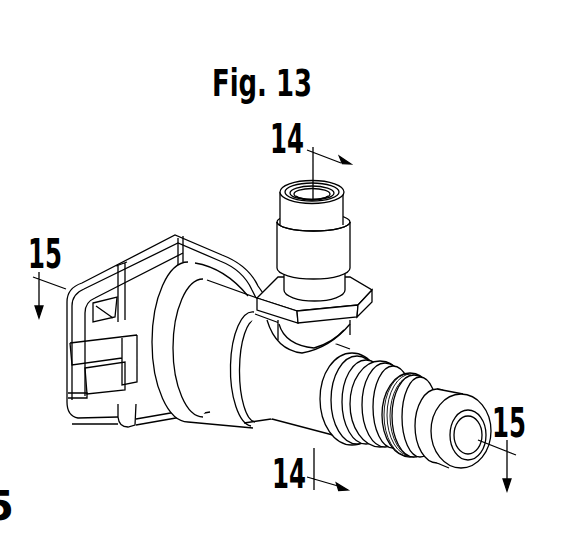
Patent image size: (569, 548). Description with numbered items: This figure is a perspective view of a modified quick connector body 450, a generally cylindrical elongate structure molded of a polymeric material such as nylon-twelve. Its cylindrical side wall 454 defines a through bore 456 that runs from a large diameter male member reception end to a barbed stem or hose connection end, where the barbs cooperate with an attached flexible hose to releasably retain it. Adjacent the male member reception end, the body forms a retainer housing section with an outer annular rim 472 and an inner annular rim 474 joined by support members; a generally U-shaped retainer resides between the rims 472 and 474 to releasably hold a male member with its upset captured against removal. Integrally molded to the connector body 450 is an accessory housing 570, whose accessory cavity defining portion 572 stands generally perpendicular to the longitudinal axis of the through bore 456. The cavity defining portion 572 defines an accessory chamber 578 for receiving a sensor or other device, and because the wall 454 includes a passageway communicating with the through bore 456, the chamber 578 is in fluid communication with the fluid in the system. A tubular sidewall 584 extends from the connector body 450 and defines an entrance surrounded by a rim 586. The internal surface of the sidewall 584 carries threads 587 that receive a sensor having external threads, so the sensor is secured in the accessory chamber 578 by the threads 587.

The connector body 450 is at (224, 433).
The wall 454 is at (358, 353).
The through bore 456 is at (466, 448).
The outer annular rim 472 is at (76, 410).
The inner annular rim 474 is at (122, 428).
The accessory housing 570 is at (371, 272).
The accessory cavity defining portion 572 is at (363, 241).
The accessory chamber 578 is at (340, 178).
The tubular sidewall 584 is at (287, 215).
The rim 586 is at (282, 192).
The threads 587 is at (300, 182).